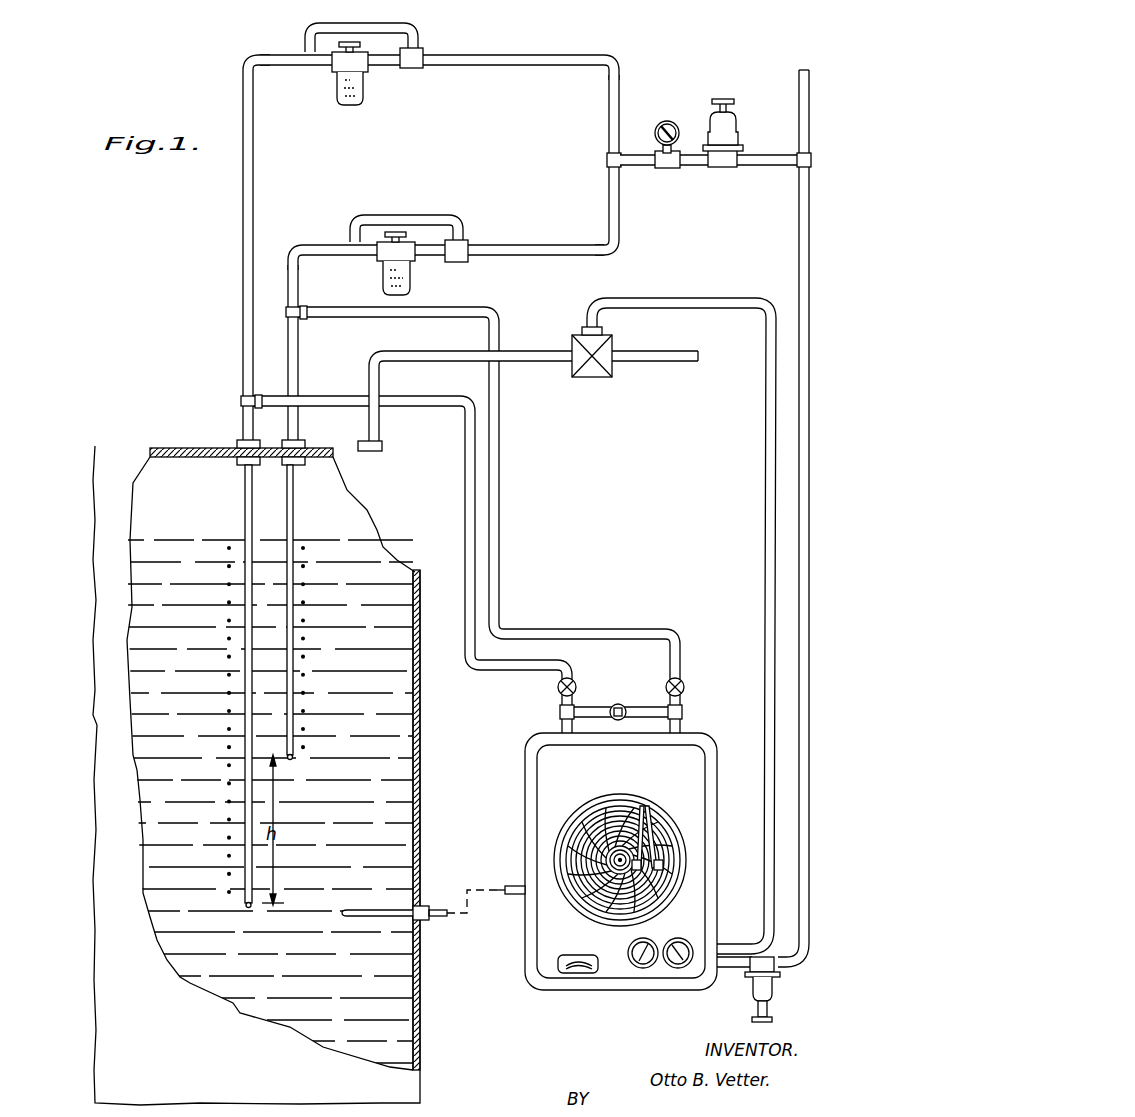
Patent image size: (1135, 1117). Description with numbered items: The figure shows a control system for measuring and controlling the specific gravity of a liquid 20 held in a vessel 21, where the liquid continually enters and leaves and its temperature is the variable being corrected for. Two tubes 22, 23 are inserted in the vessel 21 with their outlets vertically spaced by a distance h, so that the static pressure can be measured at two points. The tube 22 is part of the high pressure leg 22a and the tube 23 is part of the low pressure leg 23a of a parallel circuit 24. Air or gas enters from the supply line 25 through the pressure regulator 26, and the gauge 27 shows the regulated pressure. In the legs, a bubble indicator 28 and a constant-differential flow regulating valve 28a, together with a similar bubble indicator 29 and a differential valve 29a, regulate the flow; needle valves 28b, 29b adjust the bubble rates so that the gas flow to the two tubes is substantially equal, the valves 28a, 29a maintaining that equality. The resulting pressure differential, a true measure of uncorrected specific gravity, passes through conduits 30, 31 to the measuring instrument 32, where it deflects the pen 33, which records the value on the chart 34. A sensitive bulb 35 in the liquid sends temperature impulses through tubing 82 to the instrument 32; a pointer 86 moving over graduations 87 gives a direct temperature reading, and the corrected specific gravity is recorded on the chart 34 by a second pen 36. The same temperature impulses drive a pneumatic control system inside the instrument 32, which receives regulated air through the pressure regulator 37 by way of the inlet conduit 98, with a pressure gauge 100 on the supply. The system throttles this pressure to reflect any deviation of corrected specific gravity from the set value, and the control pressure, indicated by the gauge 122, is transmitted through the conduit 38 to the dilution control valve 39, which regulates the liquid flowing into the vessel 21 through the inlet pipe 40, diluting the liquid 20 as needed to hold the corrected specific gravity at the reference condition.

The liquid 20 is at (270, 801).
The vessel 21 is at (422, 762).
The tube 22 is at (243, 648).
The high pressure leg 22a is at (470, 62).
The tube 23 is at (296, 649).
The low pressure leg 23a is at (500, 252).
The parallel circuit 24 is at (607, 181).
The supply line 25 is at (803, 214).
The pressure regulator 26 is at (737, 124).
The gauge 27 is at (678, 116).
The bubble indicator 28 is at (336, 86).
The flow regulating valve 28a is at (412, 50).
The needle valve 28b is at (356, 42).
The bubble indicator 29 is at (382, 277).
The differential valve 29a is at (462, 243).
The needle valve 29b is at (402, 233).
The conduit 30 is at (468, 465).
The conduit 31 is at (500, 445).
The measuring instrument 32 is at (525, 830).
The pen 33 is at (645, 806).
The chart 34 is at (601, 802).
The sensitive bulb 35 is at (378, 921).
The pen 36 is at (658, 826).
The pressure regulator 37 is at (752, 985).
The conduit 38 is at (765, 580).
The dilution control valve 39 is at (585, 378).
The inlet pipe 40 is at (535, 354).
The tubing 82 is at (475, 897).
The pointer 86 is at (578, 955).
The graduations 87 is at (588, 975).
The inlet conduit 98 is at (725, 968).
The pressure gauge 100 is at (690, 935).
The gauge 122 is at (629, 949).